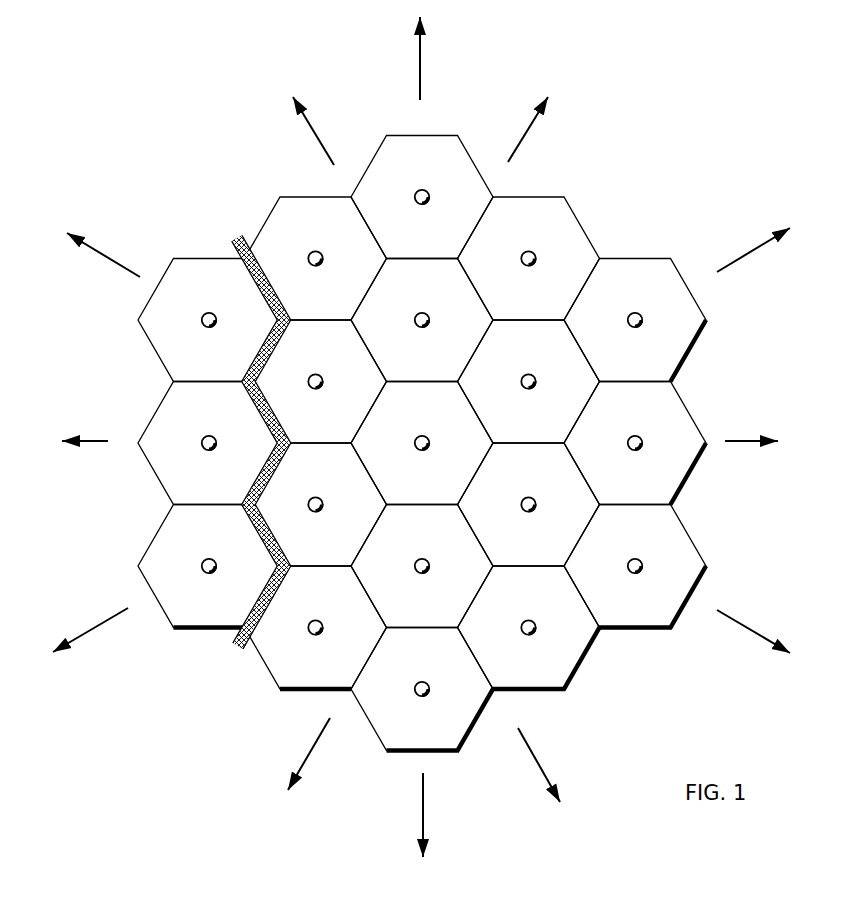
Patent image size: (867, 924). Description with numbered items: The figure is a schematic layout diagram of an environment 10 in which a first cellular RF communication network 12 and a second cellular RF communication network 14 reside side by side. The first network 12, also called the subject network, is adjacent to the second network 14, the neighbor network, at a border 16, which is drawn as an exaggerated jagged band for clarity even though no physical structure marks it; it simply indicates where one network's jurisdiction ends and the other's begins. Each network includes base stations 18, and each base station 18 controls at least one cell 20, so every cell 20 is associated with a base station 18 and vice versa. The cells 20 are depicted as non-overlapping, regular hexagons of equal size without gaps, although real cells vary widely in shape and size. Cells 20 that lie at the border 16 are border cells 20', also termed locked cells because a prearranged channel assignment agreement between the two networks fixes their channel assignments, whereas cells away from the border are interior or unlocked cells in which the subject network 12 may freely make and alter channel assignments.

The environment 10 is at (511, 870).
The first cellular RF communication network 12 is at (593, 116).
The second cellular RF communication network 14 is at (157, 188).
The border 16 is at (237, 240).
The base station 18 is at (413, 196).
The cell 20 is at (421, 428).
The border cell 20' is at (241, 444).